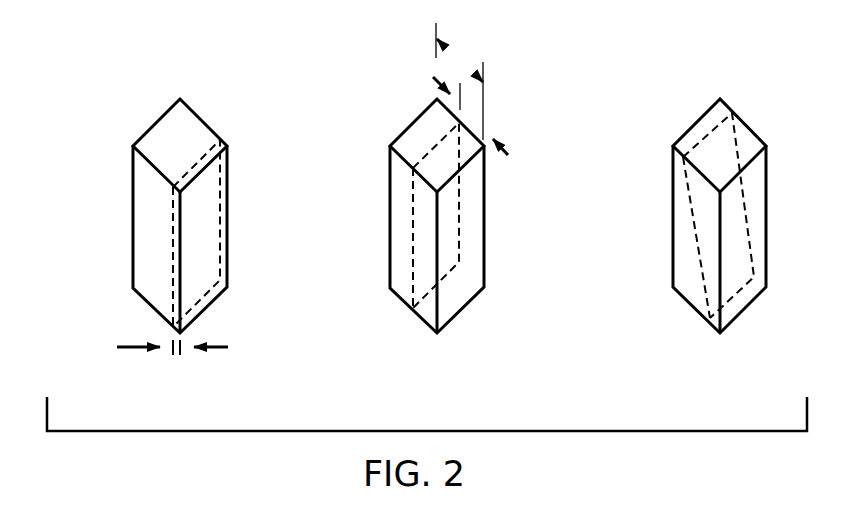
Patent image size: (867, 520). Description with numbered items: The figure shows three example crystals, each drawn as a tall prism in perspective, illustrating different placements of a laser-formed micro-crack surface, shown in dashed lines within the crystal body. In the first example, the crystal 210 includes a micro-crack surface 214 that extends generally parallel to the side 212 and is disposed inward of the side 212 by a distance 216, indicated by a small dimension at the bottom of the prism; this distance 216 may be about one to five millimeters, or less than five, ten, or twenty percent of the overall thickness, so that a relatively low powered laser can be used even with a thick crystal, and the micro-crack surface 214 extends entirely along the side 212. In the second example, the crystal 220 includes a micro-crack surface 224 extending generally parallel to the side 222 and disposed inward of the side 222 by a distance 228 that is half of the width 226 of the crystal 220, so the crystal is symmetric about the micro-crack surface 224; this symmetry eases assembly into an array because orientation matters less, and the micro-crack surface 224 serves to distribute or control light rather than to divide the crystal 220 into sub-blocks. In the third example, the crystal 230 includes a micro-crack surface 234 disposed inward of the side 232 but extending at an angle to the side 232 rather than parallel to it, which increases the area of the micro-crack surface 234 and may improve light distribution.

The crystal 210 is at (139, 91).
The side 212 is at (202, 253).
The micro-crack surface 214 is at (172, 250).
The distance 216 is at (178, 357).
The crystal 220 is at (392, 91).
The side 222 is at (463, 288).
The micro-crack surface 224 is at (413, 250).
The width 226 is at (465, 55).
The distance 228 is at (478, 110).
The crystal 230 is at (679, 91).
The side 232 is at (750, 290).
The micro-crack surface 234 is at (697, 238).